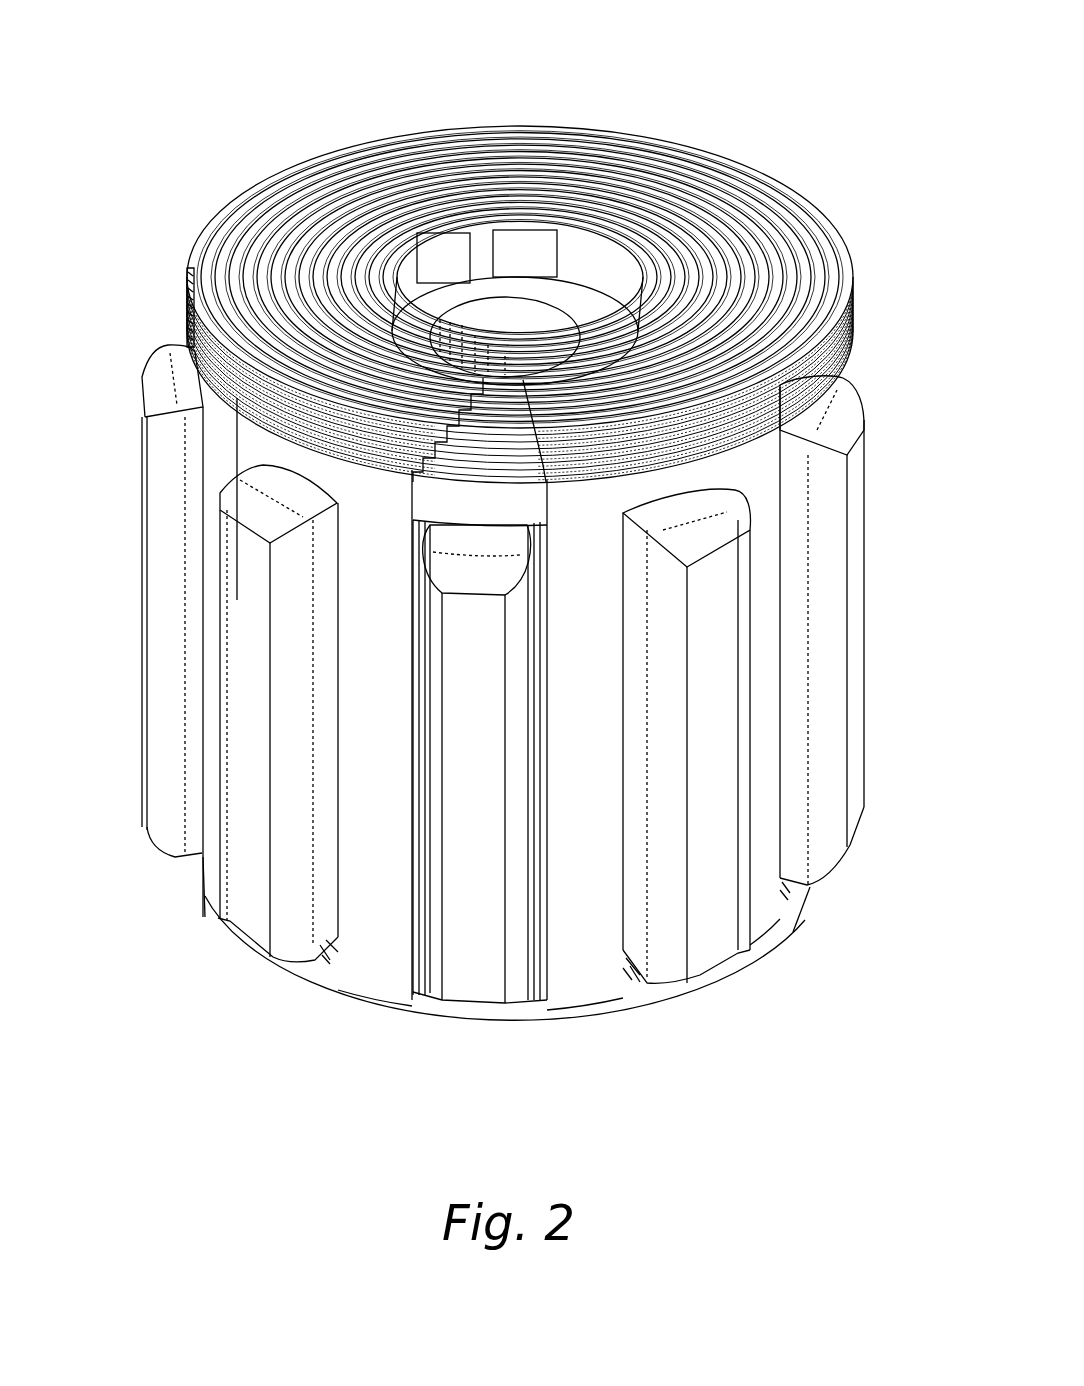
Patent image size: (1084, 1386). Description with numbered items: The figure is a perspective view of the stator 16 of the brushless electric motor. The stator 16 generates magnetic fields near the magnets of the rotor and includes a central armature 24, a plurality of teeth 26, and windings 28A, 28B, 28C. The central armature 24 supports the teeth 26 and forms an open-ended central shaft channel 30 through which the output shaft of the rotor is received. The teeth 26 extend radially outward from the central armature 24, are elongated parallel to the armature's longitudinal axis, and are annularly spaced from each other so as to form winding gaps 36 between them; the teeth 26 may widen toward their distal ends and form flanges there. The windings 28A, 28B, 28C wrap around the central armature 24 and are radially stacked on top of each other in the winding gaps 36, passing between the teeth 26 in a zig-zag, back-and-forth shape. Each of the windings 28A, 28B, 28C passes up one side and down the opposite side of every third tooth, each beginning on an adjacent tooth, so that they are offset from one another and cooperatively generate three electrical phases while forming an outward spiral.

The stator 16 is at (812, 90).
The central armature 24 is at (520, 285).
The central shaft channel 30 is at (485, 300).
The teeth 26 is at (218, 574).
The first winding 28A is at (743, 440).
The second winding 28B is at (478, 507).
The third winding 28C is at (352, 483).
The winding gaps 36 is at (585, 1012).